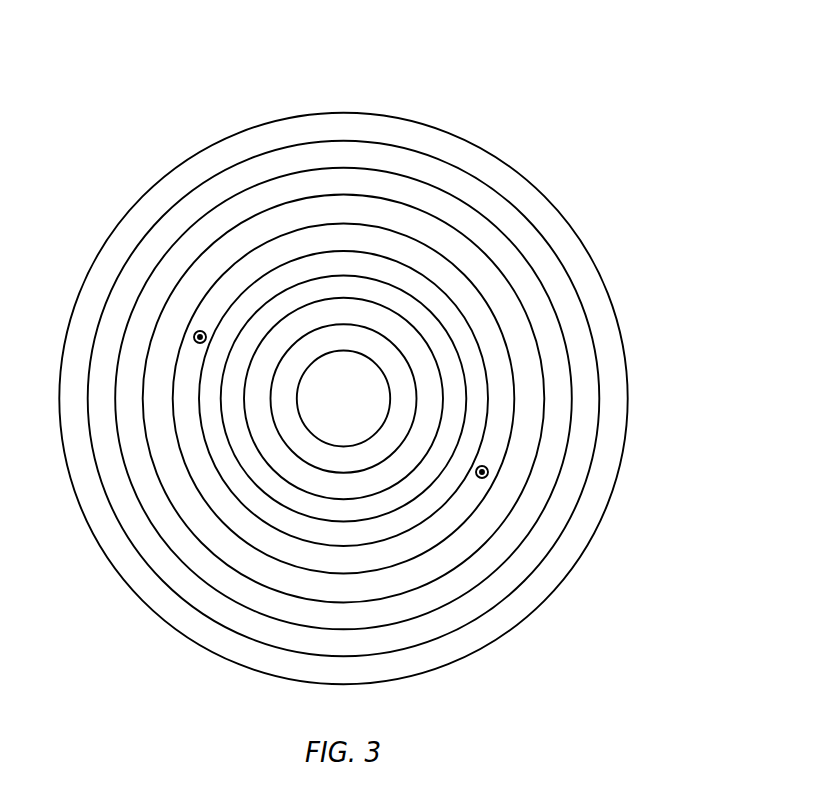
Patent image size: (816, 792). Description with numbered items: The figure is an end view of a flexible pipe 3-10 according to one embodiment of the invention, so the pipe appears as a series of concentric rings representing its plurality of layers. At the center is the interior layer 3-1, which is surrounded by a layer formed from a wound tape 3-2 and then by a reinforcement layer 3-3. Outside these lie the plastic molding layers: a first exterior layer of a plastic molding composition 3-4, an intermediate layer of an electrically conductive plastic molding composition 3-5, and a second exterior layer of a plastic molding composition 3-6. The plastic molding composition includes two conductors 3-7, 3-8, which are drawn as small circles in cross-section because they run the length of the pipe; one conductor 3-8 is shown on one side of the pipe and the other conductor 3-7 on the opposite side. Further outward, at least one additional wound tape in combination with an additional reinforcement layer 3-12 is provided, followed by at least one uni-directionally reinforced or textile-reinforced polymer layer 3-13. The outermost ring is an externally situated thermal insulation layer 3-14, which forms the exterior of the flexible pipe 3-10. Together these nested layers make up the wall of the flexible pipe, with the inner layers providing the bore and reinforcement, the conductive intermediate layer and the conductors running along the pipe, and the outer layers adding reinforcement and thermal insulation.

The interior layer 3-1 is at (367, 340).
The layer formed from a wound tape 3-2 is at (418, 350).
The reinforcement layer 3-3 is at (450, 373).
The first exterior layer of a plastic molding composition 3-4 is at (475, 393).
The intermediate layer of an electrically conductive plastic molding composition 3-5 is at (502, 408).
The second exterior layer of a plastic molding composition 3-6 is at (530, 433).
The conductor 3-7 is at (486, 477).
The conductor 3-8 is at (194, 337).
The flexible pipe 3-10 is at (136, 195).
The additional wound tape in combination with an additional reinforcement layer 3-12 is at (316, 610).
The uni-directionally reinforced or textile-reinforced polymer layer 3-13 is at (143, 537).
The externally situated thermal insulation layer 3-14 is at (212, 168).